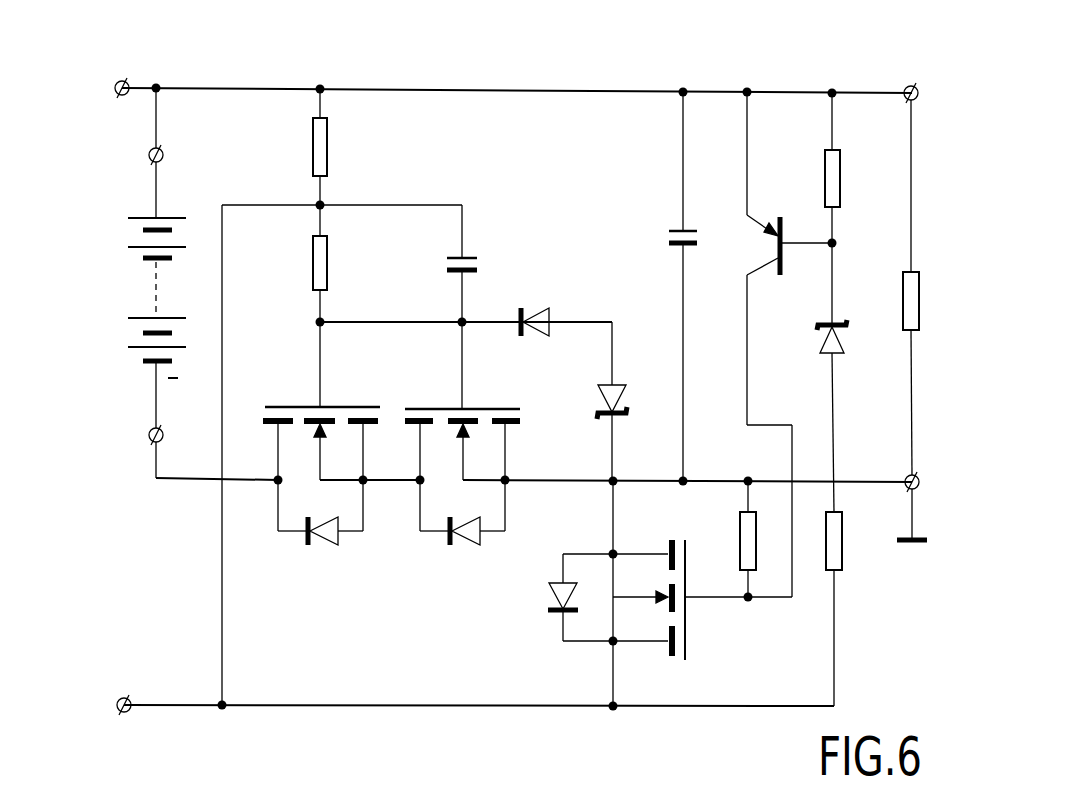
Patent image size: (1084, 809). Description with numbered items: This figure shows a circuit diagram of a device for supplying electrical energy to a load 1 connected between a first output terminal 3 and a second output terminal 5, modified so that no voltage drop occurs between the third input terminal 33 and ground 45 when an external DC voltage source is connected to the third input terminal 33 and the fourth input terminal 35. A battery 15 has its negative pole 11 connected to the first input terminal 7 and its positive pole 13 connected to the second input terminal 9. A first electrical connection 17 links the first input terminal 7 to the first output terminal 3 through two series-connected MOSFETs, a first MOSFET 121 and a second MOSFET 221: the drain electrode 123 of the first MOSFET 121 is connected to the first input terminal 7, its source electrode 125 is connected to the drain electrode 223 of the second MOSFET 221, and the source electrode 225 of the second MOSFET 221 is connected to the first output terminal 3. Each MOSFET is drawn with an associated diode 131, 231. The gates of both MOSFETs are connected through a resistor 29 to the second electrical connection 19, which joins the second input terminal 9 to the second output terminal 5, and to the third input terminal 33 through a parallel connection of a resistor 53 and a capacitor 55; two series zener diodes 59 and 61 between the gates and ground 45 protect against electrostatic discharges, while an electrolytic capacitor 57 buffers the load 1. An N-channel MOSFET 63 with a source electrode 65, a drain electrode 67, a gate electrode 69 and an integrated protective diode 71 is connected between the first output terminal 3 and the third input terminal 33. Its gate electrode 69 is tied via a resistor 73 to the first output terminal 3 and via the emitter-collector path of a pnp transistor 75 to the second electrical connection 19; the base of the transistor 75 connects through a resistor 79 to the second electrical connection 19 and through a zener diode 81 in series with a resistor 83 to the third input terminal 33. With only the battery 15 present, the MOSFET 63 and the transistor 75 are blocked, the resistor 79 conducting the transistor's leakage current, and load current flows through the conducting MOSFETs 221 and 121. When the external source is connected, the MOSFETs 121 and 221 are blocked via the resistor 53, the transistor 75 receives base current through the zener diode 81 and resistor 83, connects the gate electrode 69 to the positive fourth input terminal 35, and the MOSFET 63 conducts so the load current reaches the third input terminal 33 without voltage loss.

The load 1 is at (905, 272).
The first output terminal 3 is at (906, 478).
The second output terminal 5 is at (910, 86).
The first input terminal 7 is at (150, 440).
The second input terminal 9 is at (148, 155).
The negative pole 11 is at (142, 363).
The positive pole 13 is at (128, 218).
The battery 15 is at (136, 286).
The first electrical connection 17 is at (178, 484).
The second electrical connection 19 is at (518, 90).
The resistor 29 is at (313, 142).
The third input terminal 33 is at (122, 698).
The fourth input terminal 35 is at (119, 82).
The ground 45 is at (912, 546).
The resistor 53 is at (313, 256).
The capacitor 55 is at (446, 263).
The electrolytic capacitor 57 is at (668, 233).
The zener diode 59 is at (525, 306).
The zener diode 61 is at (628, 400).
The N-channel MOSFET 63 is at (512, 663).
The source electrode 65 is at (668, 548).
The drain electrode 67 is at (668, 658).
The gate electrode 69 is at (713, 614).
The integrated protective diode 71 is at (548, 596).
The resistor 73 is at (757, 555).
The pnp transistor 75 is at (768, 212).
The resistor 79 is at (843, 170).
The zener diode 81 is at (850, 341).
The resistor 83 is at (843, 548).
The first MOSFET 121 is at (258, 389).
The drain electrode 123 is at (270, 423).
The source electrode 125 is at (383, 420).
The second MOSFET 221 is at (508, 389).
The drain electrode 223 is at (399, 420).
The source electrode 225 is at (518, 425).
The diode 131 is at (306, 545).
The diode 231 is at (448, 545).